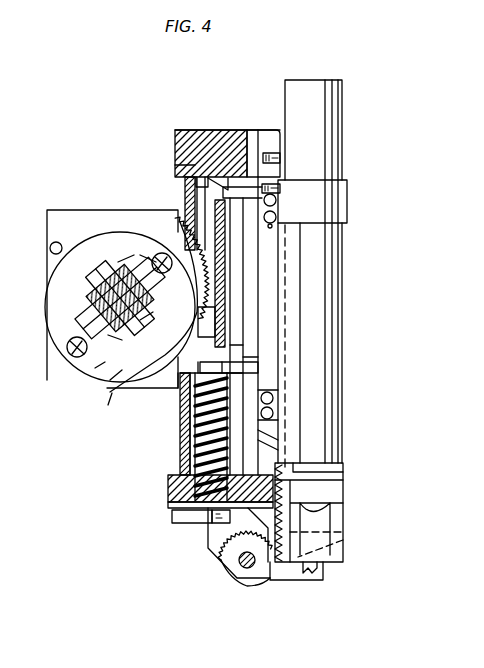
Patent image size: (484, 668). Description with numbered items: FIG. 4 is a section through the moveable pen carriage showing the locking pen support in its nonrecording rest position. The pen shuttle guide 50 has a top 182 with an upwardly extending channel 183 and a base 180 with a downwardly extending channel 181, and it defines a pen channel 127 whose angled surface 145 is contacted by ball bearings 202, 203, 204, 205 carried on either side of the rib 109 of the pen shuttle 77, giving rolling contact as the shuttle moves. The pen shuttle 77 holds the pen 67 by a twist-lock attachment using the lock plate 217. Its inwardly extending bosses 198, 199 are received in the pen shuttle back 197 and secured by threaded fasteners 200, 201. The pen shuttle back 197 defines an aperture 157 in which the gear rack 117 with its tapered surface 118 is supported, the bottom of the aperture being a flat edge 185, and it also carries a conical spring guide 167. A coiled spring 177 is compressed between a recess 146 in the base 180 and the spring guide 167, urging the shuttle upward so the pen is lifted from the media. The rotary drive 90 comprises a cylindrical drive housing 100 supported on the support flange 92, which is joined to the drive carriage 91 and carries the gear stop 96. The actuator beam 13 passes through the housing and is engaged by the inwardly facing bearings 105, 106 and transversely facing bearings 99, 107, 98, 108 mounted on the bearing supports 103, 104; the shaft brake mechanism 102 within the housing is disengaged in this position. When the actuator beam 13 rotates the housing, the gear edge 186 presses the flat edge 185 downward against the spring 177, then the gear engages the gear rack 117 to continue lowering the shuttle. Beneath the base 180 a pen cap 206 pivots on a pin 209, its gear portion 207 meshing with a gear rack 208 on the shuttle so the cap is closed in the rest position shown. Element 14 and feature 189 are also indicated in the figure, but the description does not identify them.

The actuator beam 13 is at (140, 320).
The shaft 14 is at (222, 352).
The pen shuttle guide 50 is at (233, 122).
The pen 67 is at (342, 102).
The pen shuttle 77 is at (338, 210).
The rotary drive 90 is at (111, 398).
The drive carriage 91 is at (187, 430).
The support flange 92 is at (60, 210).
The gear stop 96 is at (58, 247).
The transversely facing bearing 98 is at (84, 307).
The transversely facing bearing 99 is at (130, 260).
The drive housing 100 is at (70, 352).
The shaft brake mechanism 102 is at (99, 258).
The bearing support 103 is at (150, 260).
The bearing support 104 is at (118, 375).
The inwardly facing bearing 105 is at (142, 258).
The inwardly facing bearing 106 is at (100, 370).
The transversely facing bearing 107 is at (180, 225).
The transversely facing bearing 108 is at (115, 335).
The rib 109 is at (270, 263).
The gear rack 117 is at (232, 268).
The tapered surface 118 is at (235, 290).
The pen channel 127 is at (253, 147).
The angled surface 145 is at (273, 140).
The recess 146 is at (180, 524).
The aperture 157 is at (225, 310).
The spring guide 167 is at (213, 440).
The coiled spring 177 is at (203, 450).
The base 180 is at (280, 490).
The downwardly extending channel 181 is at (177, 477).
The top 182 is at (200, 167).
The upwardly extending channel 183 is at (185, 182).
The flat edge 185 is at (178, 395).
The edge 186 is at (220, 330).
The passage 189 is at (343, 540).
The pen shuttle back 197 is at (274, 398).
The boss 198 is at (247, 188).
The boss 199 is at (227, 368).
The threaded fastener 200 is at (183, 168).
The threaded fastener 201 is at (188, 398).
The ball bearing 202 is at (300, 195).
The ball bearing 203 is at (285, 222).
The ball bearing 204 is at (285, 398).
The ball bearing 205 is at (277, 412).
The pen cap 206 is at (293, 580).
The gear portion 207 is at (218, 565).
The gear rack 208 is at (290, 525).
The pin 209 is at (250, 570).
The lock plate 217 is at (342, 465).